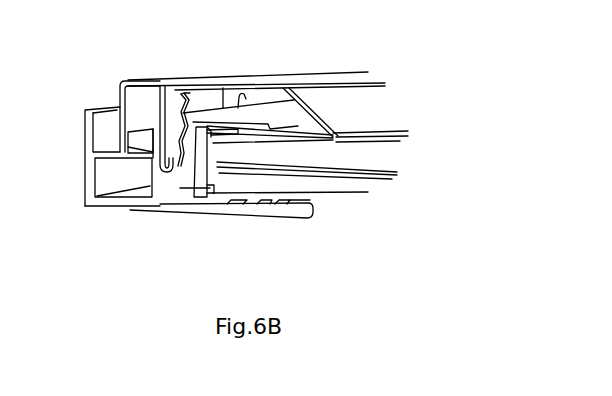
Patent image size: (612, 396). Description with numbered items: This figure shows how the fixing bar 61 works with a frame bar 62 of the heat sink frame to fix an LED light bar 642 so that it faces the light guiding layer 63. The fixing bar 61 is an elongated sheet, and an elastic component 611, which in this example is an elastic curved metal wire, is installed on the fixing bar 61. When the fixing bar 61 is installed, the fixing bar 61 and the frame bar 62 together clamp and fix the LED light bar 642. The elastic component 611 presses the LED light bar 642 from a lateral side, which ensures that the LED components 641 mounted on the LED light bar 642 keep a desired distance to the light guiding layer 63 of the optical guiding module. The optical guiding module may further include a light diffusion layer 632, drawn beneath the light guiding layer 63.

The fixing bar 61 is at (265, 78).
The elastic component 611 is at (182, 103).
The frame block 62 is at (92, 156).
The light guiding layer 63 is at (365, 190).
The light diffusion layer 632 is at (347, 207).
The LED components 641 is at (197, 192).
The LED light bar 642 is at (182, 188).